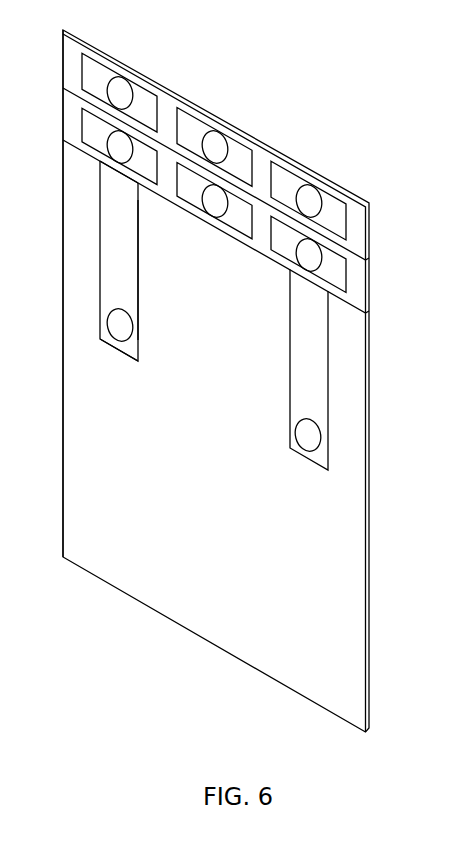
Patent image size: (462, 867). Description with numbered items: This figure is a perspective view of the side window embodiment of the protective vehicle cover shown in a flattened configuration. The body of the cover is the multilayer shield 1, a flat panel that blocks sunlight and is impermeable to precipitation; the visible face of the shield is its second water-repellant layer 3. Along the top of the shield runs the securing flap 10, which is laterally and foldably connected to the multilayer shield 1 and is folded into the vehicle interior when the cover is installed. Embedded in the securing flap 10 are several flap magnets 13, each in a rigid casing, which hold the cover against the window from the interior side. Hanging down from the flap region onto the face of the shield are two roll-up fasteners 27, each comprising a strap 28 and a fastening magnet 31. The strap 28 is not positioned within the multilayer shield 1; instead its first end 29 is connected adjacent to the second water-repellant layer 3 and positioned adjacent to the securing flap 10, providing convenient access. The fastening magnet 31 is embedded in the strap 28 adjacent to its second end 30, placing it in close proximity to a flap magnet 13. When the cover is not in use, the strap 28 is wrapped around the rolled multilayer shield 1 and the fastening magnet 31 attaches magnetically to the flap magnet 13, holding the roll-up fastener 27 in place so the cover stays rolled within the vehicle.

The multilayer shield 1 is at (379, 544).
The second water-repellant layer 3 is at (69, 170).
The securing flap 10 is at (366, 278).
The flap magnet 13 is at (117, 80).
The roll-up fastener 27 is at (142, 366).
The strap 28 is at (139, 252).
The first end 29 is at (137, 186).
The second end 30 is at (115, 351).
The fastening magnet 31 is at (117, 312).